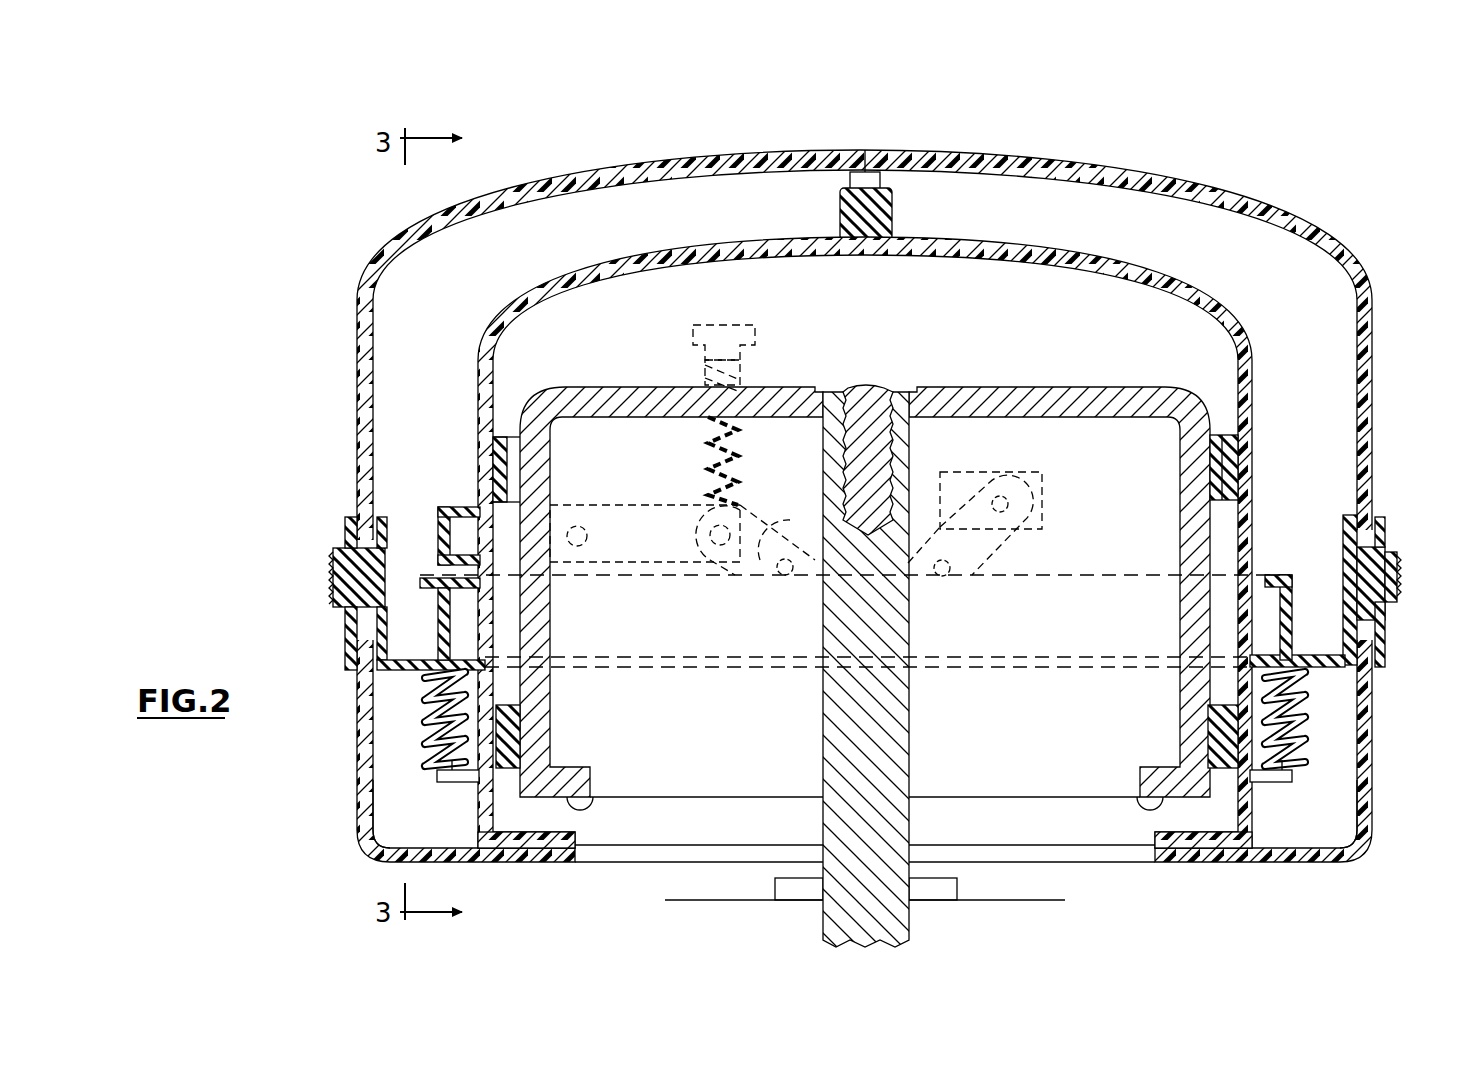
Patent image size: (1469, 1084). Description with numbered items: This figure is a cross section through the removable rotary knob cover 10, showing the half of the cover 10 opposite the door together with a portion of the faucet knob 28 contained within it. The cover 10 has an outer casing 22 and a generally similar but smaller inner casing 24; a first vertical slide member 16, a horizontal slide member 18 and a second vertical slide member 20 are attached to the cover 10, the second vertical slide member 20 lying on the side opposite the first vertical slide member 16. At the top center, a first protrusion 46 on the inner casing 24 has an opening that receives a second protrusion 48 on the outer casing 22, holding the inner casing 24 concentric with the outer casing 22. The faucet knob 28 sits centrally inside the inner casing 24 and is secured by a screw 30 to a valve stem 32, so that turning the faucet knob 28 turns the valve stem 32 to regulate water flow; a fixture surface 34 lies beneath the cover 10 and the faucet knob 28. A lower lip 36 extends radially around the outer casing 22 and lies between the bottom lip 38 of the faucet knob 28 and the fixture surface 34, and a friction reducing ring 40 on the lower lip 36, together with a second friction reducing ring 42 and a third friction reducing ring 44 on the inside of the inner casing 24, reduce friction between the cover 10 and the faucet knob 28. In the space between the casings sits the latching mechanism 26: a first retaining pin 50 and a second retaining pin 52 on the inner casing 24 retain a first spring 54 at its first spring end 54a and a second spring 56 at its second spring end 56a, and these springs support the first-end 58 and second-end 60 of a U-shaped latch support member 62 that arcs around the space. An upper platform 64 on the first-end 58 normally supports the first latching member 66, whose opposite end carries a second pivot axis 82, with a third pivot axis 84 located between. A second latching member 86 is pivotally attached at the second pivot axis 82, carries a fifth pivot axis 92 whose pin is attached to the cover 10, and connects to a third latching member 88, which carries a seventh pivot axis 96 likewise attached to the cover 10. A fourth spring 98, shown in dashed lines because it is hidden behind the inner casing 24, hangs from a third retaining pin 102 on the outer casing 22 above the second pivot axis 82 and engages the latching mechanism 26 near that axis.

The removable rotary knob cover 10 is at (1136, 148).
The first vertical slide member 16 is at (1397, 582).
The horizontal slide member 18 is at (1020, 472).
The second vertical slide member 20 is at (333, 578).
The outer casing 22 is at (1372, 322).
The inner casing 24 is at (478, 396).
The latching mechanism 26 is at (408, 686).
The faucet knob 28 is at (550, 706).
The screw 30 is at (868, 390).
The valve stem 32 is at (909, 715).
The fixture surface 34 is at (730, 900).
The lower lip 36 is at (470, 865).
The bottom lip 38 is at (588, 797).
The friction reducing ring 40 is at (565, 840).
The second friction reducing ring 42 is at (1210, 730).
The third friction reducing ring 44 is at (1210, 470).
The first protrusion 46 is at (840, 218).
The second protrusion 48 is at (868, 152).
The first retaining pin 50 is at (455, 785).
The second retaining pin 52 is at (1270, 785).
The first spring 54 is at (430, 722).
The first spring end 54a is at (440, 776).
The second spring 56 is at (1305, 722).
The second spring end 56a is at (1295, 778).
The first-end 58 is at (440, 660).
The second-end 60 is at (1292, 600).
The U-shaped latch support member 62 is at (1275, 568).
The upper platform 64 is at (438, 578).
The first latching member 66 is at (478, 545).
The second pivot axis 82 is at (715, 560).
The third pivot axis 84 is at (588, 536).
The second latching member 86 is at (760, 512).
The third latching member 88 is at (1010, 545).
The fifth pivot axis 92 is at (787, 578).
The seventh pivot axis 96 is at (945, 578).
The fourth spring 98 is at (742, 362).
The third retaining pin 102 is at (740, 325).